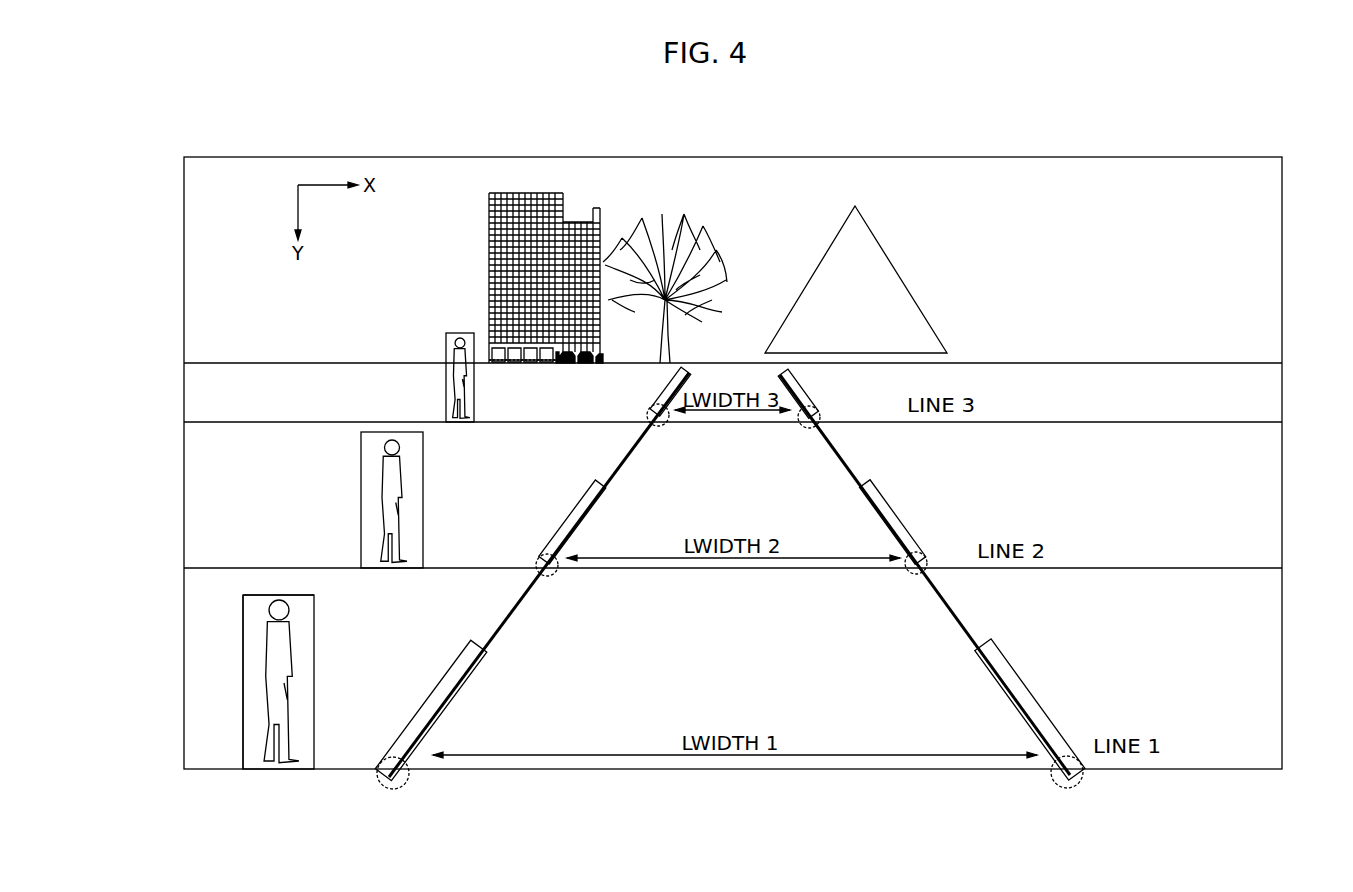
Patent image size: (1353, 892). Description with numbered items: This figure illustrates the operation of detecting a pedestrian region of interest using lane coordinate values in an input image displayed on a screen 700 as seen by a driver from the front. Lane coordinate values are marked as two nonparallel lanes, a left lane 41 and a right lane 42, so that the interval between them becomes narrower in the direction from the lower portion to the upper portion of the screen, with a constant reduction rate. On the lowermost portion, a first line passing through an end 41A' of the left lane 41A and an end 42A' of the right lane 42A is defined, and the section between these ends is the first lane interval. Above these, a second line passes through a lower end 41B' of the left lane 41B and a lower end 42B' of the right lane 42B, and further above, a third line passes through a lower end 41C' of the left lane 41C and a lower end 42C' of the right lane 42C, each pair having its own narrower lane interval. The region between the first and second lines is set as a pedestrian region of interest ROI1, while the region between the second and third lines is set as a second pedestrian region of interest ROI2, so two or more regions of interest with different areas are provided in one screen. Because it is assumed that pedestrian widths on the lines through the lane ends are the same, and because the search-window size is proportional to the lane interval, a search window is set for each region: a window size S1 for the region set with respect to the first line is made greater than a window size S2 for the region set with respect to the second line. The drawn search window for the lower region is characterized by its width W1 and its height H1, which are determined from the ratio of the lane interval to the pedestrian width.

The image frame 700 is at (1255, 153).
The left lane 41 is at (523, 602).
The right lane 42 is at (940, 603).
The left lane (lowermost portion) 41A is at (468, 708).
The left lane (above 41A) 41B is at (610, 512).
The left lane (above 41B) 41C is at (635, 391).
The end of left lane 41A 41A' is at (364, 753).
The lower end of left lane 41B 41B' is at (514, 545).
The lower end of left lane 41C 41C' is at (619, 410).
The right lane (lowermost portion) 42A is at (996, 706).
The right lane (above 42A) 42B is at (854, 512).
The right lane (above 42B) 42C is at (832, 392).
The end of right lane 42A 42A' is at (1099, 793).
The lower end of right lane 42B 42B' is at (954, 543).
The lower end of right lane 42C 42C' is at (847, 410).
The pedestrian region of interest ROI1 is at (226, 641).
The pedestrian region of interest ROI2 is at (235, 449).
The window size S1 is at (242, 707).
The window size S2 is at (360, 545).
The window width W1 is at (278, 582).
The window height H1 is at (226, 682).